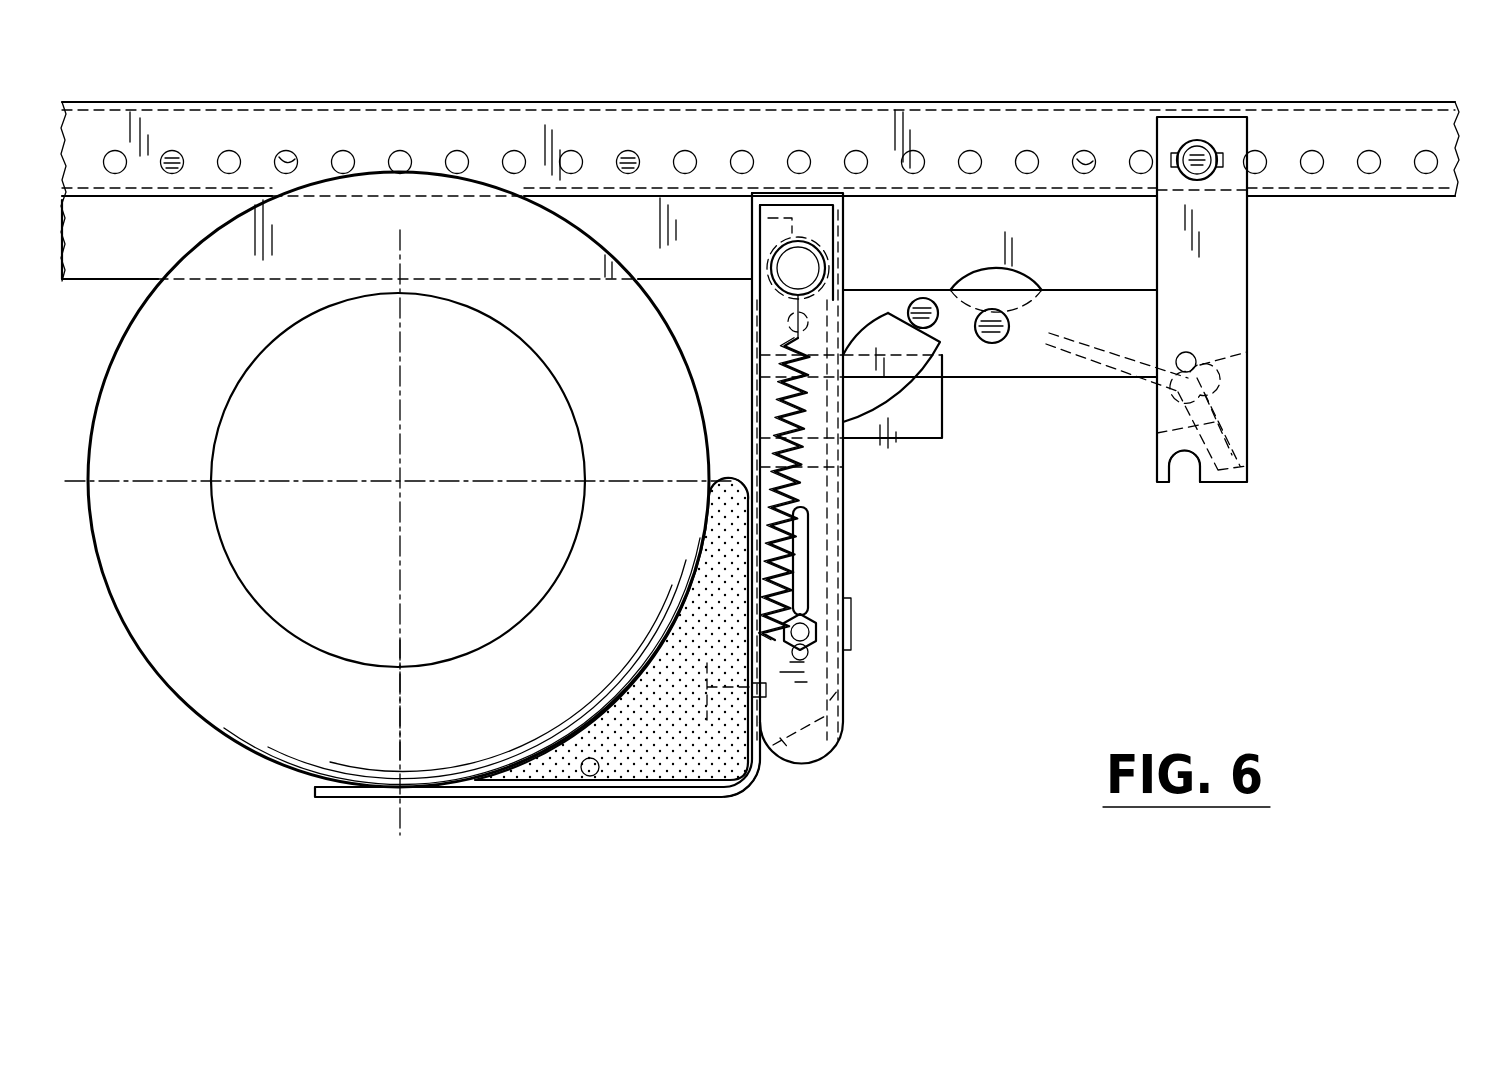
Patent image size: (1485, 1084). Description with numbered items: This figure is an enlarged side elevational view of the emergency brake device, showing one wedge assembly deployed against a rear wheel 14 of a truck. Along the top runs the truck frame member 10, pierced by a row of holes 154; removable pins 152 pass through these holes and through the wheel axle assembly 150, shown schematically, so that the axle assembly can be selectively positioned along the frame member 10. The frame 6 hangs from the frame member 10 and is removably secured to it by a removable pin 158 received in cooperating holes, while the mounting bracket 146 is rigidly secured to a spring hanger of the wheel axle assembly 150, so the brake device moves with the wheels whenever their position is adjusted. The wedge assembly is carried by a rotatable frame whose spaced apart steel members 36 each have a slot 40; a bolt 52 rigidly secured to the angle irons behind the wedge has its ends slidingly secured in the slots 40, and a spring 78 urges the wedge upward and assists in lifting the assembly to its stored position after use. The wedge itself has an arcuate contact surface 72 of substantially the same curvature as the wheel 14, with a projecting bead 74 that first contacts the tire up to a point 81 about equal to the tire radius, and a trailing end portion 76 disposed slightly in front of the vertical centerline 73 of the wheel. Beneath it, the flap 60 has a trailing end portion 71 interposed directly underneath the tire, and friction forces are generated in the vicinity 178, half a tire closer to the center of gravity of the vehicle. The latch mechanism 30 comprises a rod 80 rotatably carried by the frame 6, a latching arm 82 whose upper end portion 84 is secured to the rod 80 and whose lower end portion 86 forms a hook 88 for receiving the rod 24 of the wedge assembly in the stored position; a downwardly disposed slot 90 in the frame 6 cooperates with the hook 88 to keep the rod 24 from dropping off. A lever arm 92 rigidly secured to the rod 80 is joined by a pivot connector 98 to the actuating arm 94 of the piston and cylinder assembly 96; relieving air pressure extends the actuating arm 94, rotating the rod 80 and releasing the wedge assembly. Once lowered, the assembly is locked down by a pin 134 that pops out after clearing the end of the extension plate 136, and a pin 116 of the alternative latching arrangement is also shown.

The truck frame member 10 is at (845, 98).
The removable pin 152 is at (172, 150).
The hole 154 is at (289, 152).
The wheel axle assembly 150 is at (642, 201).
The removable pin 158 is at (1195, 137).
The frame 6 is at (1248, 268).
The latching arm 82 is at (1222, 486).
The lower end portion 86 is at (1200, 486).
The hook 88 is at (1186, 490).
The slot 90 is at (1180, 470).
The rod 80 is at (1187, 351).
The pivot connector 98 is at (1224, 386).
The lever arm 92 is at (1237, 357).
The latch mechanism 30 is at (1246, 428).
The upper end portion 84 is at (1157, 434).
The actuating arm 94 is at (1095, 360).
The extension plate 136 is at (857, 334).
The pin 134 is at (923, 297).
The pin 116 is at (988, 343).
The piston and cylinder assembly 96 is at (1010, 285).
The steel member 36 is at (832, 736).
The mounting bracket 146 is at (751, 249).
The spring 78 is at (834, 470).
The slot 40 is at (808, 560).
The bolt 52 is at (807, 632).
The flap 60 is at (724, 794).
The friction point 178 is at (762, 784).
The trailing end portion 71 is at (350, 798).
The rod 24 is at (590, 778).
The bead 74 is at (706, 520).
The trailing end portion 76 is at (540, 772).
The contact point 81 is at (709, 496).
The wheel 14 is at (224, 736).
The contact surface 72 is at (674, 648).
The vertical centerline 73 is at (398, 700).